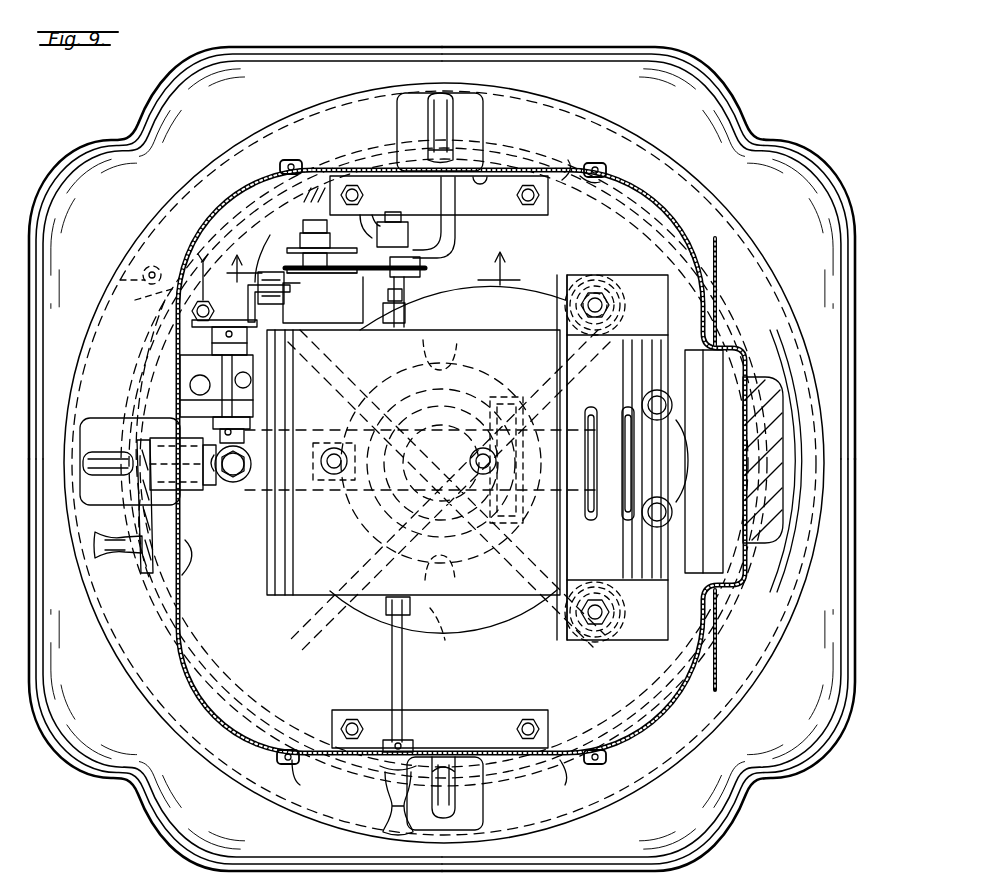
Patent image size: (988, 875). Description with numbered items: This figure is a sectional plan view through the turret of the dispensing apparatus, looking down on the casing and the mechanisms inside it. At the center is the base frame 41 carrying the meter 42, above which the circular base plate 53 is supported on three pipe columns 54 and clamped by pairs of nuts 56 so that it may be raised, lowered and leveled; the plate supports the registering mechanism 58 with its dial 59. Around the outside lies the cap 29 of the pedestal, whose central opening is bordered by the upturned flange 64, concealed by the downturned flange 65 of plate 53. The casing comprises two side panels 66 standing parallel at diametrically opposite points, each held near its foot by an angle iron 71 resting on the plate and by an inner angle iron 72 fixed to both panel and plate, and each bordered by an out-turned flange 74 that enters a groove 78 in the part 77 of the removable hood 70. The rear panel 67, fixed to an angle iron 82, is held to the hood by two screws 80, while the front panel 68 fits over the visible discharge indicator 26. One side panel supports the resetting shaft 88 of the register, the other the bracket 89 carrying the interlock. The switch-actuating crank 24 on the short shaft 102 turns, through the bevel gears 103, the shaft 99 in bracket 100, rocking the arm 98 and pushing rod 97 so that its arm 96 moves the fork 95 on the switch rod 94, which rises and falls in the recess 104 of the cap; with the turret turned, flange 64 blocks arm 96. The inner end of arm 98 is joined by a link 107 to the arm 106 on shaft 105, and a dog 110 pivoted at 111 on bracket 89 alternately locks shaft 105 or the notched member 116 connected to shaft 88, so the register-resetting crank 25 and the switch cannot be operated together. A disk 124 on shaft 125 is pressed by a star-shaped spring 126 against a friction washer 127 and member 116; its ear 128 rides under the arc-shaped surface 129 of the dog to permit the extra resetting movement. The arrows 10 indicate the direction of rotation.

The direction arrow 10 is at (379, 283).
The switch-actuating crank 24 is at (140, 560).
The register-resetting crank 25 is at (385, 803).
The visible discharge indicator 26 is at (760, 378).
The cap 29 is at (112, 690).
The base frame 41 is at (298, 520).
The meter 42 is at (444, 640).
The circular base plate 53 is at (612, 147).
The pipe columns 54 is at (600, 285).
The nuts 56 is at (585, 640).
The registering mechanism 58 is at (312, 597).
The dial 59 is at (588, 285).
The upturned marginal flange 64 is at (232, 680).
The downturned marginal flange 65 is at (275, 118).
The side panels 66 is at (556, 470).
The rear panel 67 is at (195, 564).
The front panel 68 is at (718, 650).
The hood 70 is at (190, 250).
The angle iron 71 is at (473, 112).
The inner angle iron 72 is at (510, 215).
The out-turned marginal flange 74 is at (585, 180).
The part embordering the opening 77 is at (291, 160).
The groove 78 is at (598, 178).
The screws 80 is at (165, 598).
The angle iron 82 is at (141, 461).
The resetting shaft 88 is at (392, 666).
The bracket 89 is at (490, 180).
The operating rod 94 is at (135, 265).
The fork 95 is at (107, 275).
The arm 96 is at (120, 302).
The rod 97 is at (224, 276).
The arm 98 is at (260, 254).
The shaft 99 is at (250, 368).
The bracket 100 is at (180, 395).
The short shaft 102 is at (175, 535).
The bevel gears 103 is at (228, 482).
The recess 104 is at (140, 400).
The short shaft 105 is at (323, 300).
The arm 106 is at (290, 300).
The link 107 is at (287, 303).
The dog 110 is at (298, 250).
The pivot 111 is at (318, 189).
The member 116 is at (480, 330).
The disk 124 is at (425, 262).
The shaft 125 is at (388, 212).
The star-shaped spring 126 is at (410, 240).
The friction washer 127 is at (420, 268).
The ear 128 is at (414, 302).
The arc-shaped surface 129 is at (766, 868).